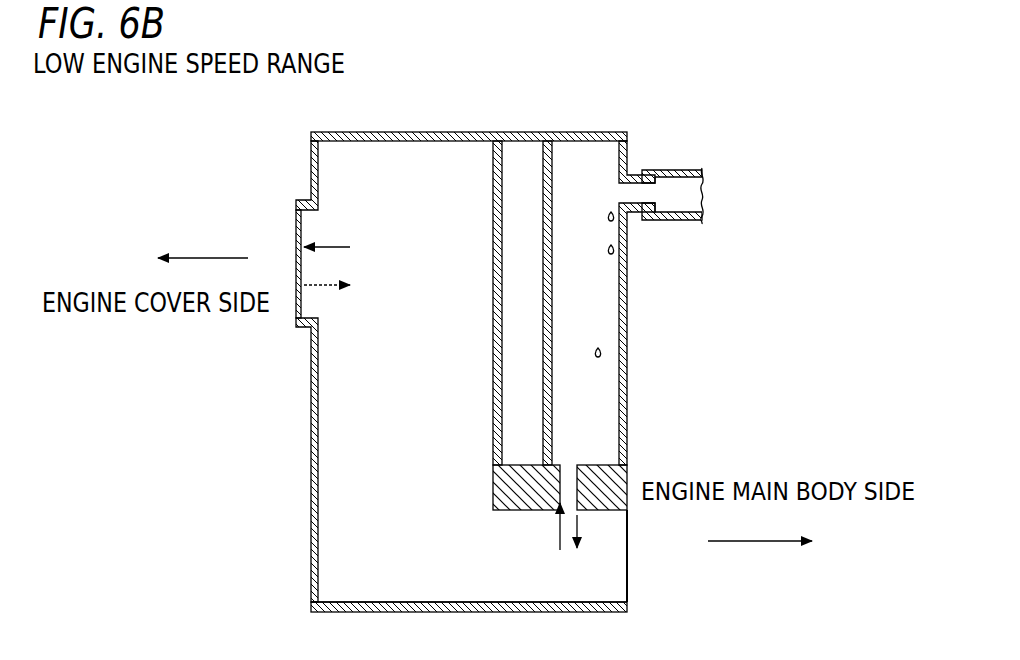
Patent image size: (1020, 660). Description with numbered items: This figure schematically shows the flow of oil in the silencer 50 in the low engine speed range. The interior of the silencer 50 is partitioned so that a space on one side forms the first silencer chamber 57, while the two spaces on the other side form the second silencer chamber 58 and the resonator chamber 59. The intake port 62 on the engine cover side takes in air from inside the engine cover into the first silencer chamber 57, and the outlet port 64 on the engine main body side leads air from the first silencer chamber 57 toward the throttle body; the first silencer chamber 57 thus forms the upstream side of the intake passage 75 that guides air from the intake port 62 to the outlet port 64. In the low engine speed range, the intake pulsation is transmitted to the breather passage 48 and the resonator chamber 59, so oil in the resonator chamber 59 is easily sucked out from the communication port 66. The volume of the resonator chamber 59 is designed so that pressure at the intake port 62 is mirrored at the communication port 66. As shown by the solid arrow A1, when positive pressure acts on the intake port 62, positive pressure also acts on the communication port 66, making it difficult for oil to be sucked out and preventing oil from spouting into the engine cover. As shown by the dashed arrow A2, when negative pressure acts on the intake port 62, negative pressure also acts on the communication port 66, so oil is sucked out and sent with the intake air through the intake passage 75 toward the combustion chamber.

The silencer 50 is at (392, 131).
The first silencer chamber 57 is at (435, 160).
The second silencer chamber 58 is at (532, 287).
The resonator chamber 59 is at (591, 287).
The intake port 62 is at (294, 230).
The breather passage 48 is at (703, 188).
The communication port 66 is at (573, 466).
The outlet port 64 is at (627, 588).
The intake passage 75 is at (518, 591).
The solid arrow A1 is at (327, 245).
The dashed arrow A2 is at (325, 288).